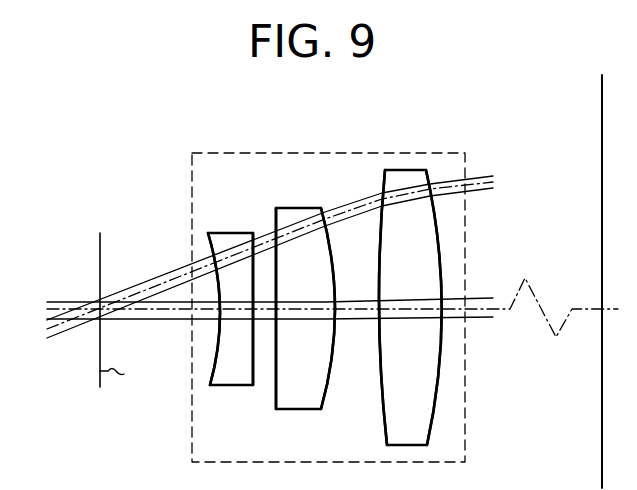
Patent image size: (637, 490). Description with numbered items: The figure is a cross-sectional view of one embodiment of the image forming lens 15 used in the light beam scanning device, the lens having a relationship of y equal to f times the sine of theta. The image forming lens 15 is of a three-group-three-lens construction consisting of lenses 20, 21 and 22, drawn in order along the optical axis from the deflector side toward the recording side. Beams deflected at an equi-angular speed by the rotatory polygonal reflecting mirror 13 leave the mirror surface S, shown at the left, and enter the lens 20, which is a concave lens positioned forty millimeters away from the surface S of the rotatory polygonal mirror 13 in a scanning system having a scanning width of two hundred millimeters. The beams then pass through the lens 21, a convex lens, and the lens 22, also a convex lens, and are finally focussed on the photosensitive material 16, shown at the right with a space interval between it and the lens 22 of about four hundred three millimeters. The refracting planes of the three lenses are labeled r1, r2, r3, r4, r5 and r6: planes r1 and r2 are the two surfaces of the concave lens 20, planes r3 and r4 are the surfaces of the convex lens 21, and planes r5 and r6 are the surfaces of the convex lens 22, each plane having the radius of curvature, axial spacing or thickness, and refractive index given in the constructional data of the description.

The rotatory polygonal reflecting mirror 13 is at (129, 375).
The image forming lens 15 is at (221, 162).
The photosensitive material 16 is at (602, 113).
The concave lens 20 is at (238, 252).
The convex lens 21 is at (301, 222).
The convex lens 22 is at (405, 186).
The surface of the rotatory polygonal mirror S is at (99, 295).
The first lens plane r1 is at (214, 372).
The second lens plane r2 is at (254, 371).
The third lens plane r3 is at (278, 377).
The fourth lens plane r4 is at (323, 389).
The fifth lens plane r5 is at (384, 405).
The sixth lens plane r6 is at (436, 414).